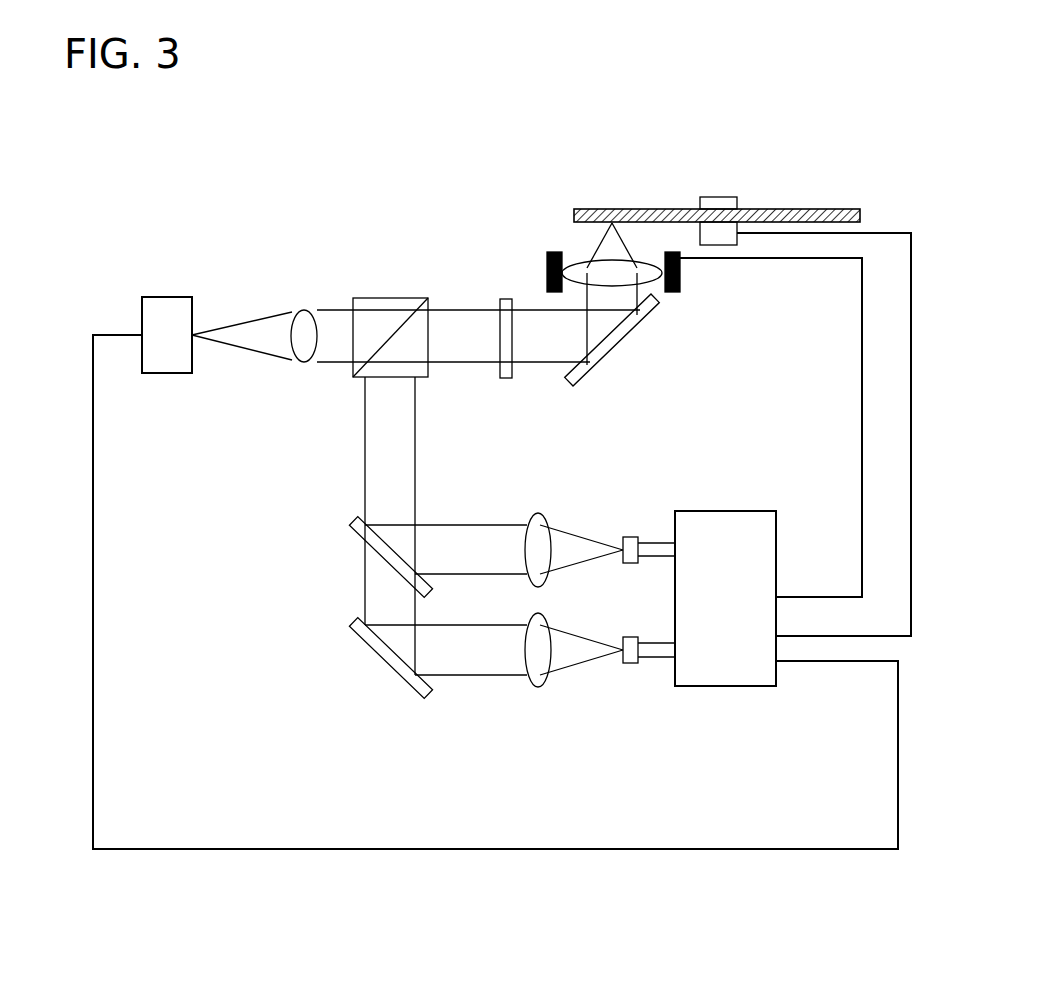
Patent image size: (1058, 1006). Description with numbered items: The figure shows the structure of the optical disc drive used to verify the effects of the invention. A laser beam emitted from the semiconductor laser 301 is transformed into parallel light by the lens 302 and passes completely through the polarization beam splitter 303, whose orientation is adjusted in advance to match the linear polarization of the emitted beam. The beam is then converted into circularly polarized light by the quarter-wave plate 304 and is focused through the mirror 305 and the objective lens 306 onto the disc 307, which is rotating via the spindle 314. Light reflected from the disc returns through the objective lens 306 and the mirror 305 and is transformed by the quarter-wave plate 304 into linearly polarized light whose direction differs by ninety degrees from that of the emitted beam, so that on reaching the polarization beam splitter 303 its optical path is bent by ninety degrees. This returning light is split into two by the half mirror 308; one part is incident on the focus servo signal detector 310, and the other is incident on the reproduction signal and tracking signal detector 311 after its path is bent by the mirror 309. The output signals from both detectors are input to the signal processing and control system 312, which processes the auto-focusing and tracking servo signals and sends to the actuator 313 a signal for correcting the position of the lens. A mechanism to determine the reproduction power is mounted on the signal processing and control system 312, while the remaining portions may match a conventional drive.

The semiconductor laser 301 is at (157, 357).
The lens 302 is at (300, 345).
The polarization beam splitter 303 is at (422, 350).
The λ/4 plate 304 is at (512, 372).
The mirror 305 is at (630, 335).
The objective lens 306 is at (573, 268).
The disc 307 is at (770, 208).
The half mirror 308 is at (352, 530).
The mirror 309 is at (352, 630).
The focus servo signal detector 310 is at (641, 536).
The reproduction signal and tracking signal detector 311 is at (622, 665).
The signal processing and control system 312 is at (752, 660).
The actuator 313 is at (547, 270).
The spindle 314 is at (702, 208).